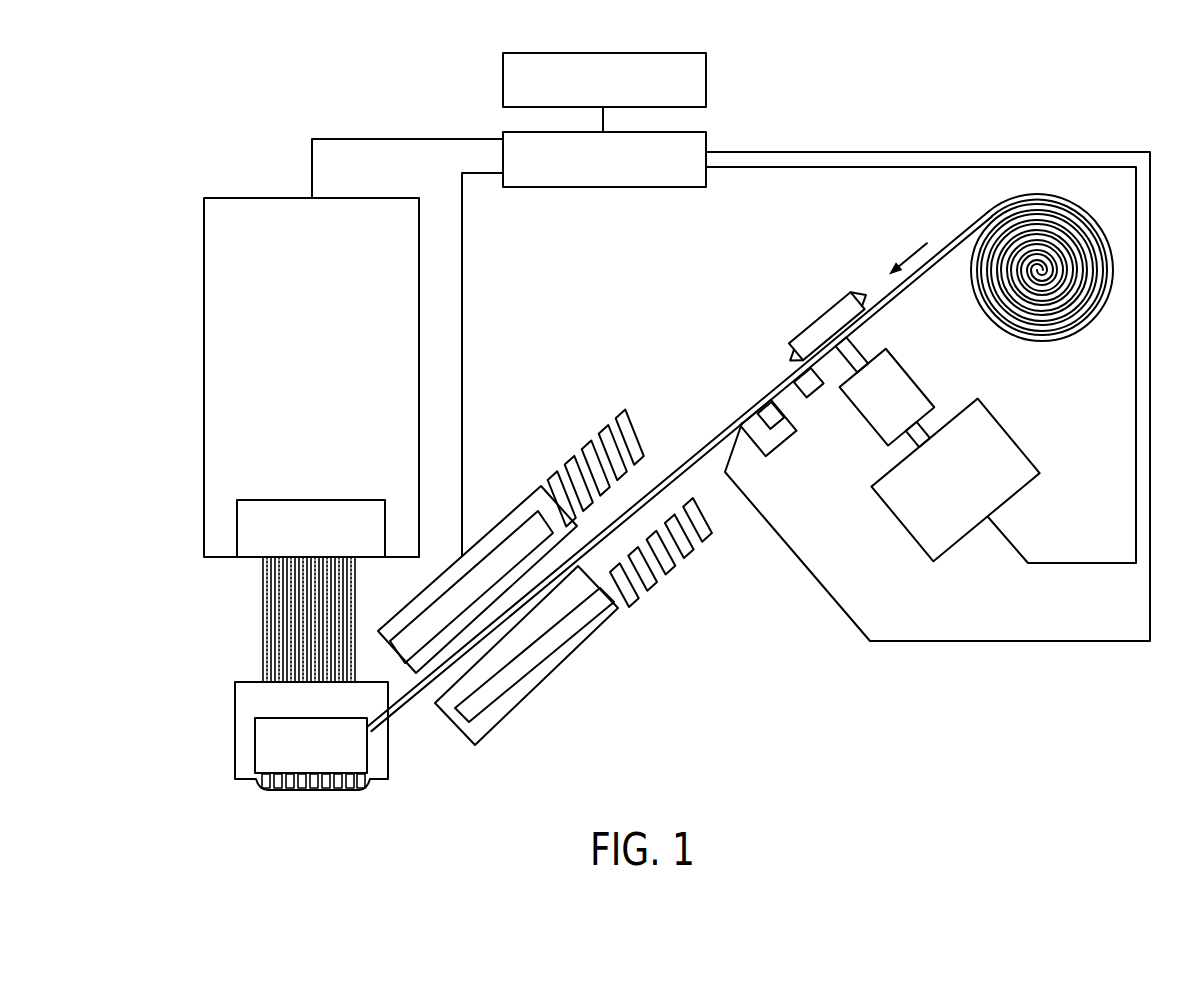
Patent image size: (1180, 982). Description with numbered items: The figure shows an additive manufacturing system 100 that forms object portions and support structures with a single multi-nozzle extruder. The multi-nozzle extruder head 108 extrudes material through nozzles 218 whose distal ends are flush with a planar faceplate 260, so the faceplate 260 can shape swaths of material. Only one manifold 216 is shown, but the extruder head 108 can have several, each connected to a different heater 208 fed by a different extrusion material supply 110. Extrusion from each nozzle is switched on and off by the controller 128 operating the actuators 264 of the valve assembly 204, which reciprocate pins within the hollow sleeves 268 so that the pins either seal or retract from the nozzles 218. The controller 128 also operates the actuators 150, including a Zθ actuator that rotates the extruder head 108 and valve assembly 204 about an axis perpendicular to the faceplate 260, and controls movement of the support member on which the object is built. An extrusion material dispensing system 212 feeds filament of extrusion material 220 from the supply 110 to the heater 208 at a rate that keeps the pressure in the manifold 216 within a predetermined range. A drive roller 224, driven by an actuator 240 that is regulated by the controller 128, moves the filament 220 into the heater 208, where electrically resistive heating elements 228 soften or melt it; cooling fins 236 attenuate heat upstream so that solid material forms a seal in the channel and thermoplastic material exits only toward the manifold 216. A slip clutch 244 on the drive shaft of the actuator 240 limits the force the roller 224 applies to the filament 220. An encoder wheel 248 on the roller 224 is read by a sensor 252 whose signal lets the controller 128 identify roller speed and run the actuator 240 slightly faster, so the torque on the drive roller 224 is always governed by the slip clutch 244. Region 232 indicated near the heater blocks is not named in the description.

The additive manufacturing system 100 is at (150, 146).
The multi-nozzle extruder head 108 is at (244, 672).
The extrusion material supply 110 is at (1087, 213).
The controller 128 is at (706, 148).
The actuators 150 is at (706, 62).
The valve assembly 204 is at (268, 198).
The heater 208 is at (577, 658).
The extrusion material dispensing system 212 is at (874, 586).
The manifold 216 is at (367, 750).
The nozzles 218 is at (280, 801).
The extrusion material filament 220 is at (945, 250).
The drive roller 224 is at (821, 320).
The heating elements 228 is at (525, 519).
The tape nip region 232 is at (485, 643).
The cooling fins 236 is at (621, 412).
The actuator 240 is at (1015, 441).
The slip clutch 244 is at (925, 395).
The encoder wheel 248 is at (815, 392).
The sensor 252 is at (783, 450).
The faceplate 260 is at (368, 786).
The actuators 264 is at (320, 499).
The sleeves 268 is at (262, 590).